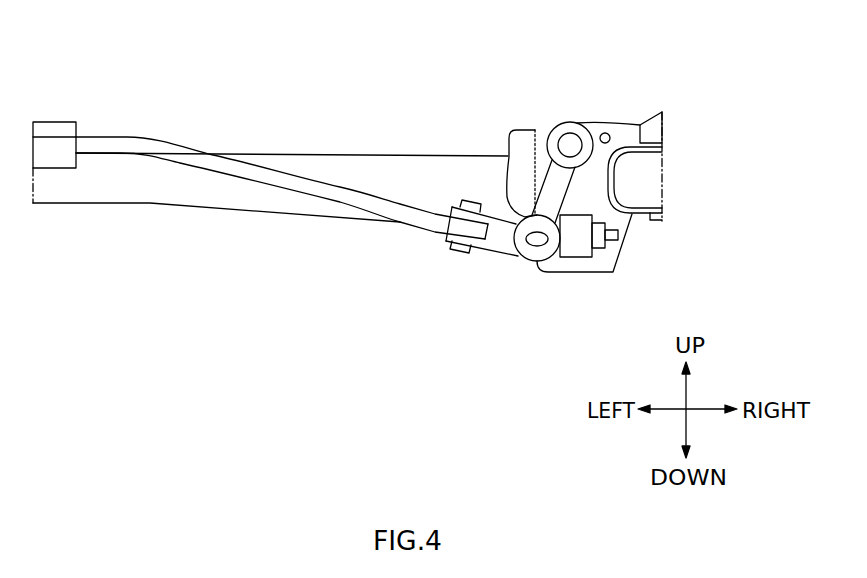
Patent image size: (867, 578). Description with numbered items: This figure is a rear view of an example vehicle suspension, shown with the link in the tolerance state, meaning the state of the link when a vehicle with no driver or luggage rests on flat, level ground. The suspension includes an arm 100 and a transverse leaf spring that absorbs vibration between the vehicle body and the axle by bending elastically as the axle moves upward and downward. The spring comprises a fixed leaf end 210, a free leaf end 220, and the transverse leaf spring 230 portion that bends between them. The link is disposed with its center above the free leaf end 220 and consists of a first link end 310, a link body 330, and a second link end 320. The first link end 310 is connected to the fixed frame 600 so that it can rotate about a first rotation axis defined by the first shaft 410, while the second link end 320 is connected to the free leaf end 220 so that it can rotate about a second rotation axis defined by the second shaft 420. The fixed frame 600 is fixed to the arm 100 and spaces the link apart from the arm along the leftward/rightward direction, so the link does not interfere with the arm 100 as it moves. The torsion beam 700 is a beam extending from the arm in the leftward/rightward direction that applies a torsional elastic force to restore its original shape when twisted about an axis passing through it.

The arm 100 is at (650, 143).
The fixed leaf end 210 is at (48, 120).
The free leaf end 220 is at (495, 247).
The transverse leaf spring 230 is at (142, 150).
The first link end 310 is at (551, 128).
The second link end 320 is at (508, 155).
The link body 330 is at (535, 130).
The first shaft 410 is at (580, 135).
The second shaft 420 is at (538, 240).
The fixed frame 600 is at (605, 260).
The torsion beam 700 is at (147, 190).